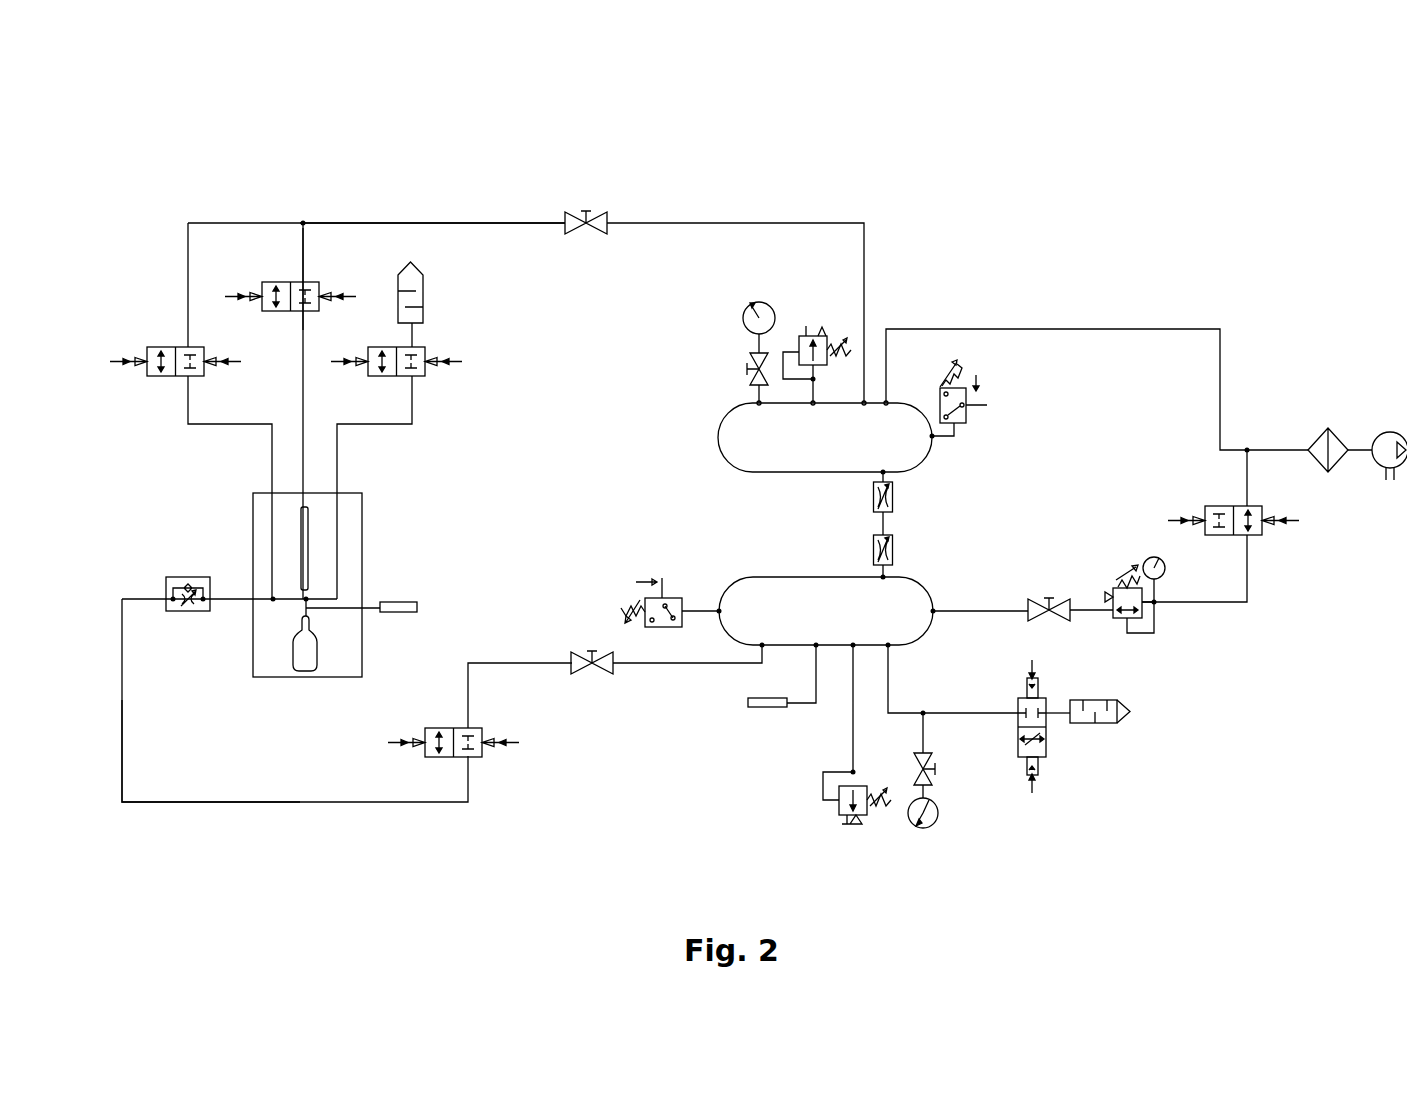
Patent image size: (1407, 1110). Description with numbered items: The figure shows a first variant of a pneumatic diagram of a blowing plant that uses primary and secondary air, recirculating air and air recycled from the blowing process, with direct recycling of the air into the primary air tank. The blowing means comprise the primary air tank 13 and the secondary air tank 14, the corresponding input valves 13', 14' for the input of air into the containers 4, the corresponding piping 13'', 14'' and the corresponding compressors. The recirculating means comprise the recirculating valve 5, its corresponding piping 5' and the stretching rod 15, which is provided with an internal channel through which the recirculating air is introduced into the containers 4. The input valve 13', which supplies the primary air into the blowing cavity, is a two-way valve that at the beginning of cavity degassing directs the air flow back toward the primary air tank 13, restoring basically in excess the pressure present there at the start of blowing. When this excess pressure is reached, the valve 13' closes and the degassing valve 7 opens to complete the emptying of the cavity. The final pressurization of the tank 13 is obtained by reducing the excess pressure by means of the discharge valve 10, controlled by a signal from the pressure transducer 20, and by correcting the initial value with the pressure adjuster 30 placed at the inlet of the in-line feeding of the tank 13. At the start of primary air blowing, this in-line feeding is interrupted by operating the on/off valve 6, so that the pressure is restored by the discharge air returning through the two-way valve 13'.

The container 4 is at (307, 652).
The recirculating valve 5 is at (290, 204).
The recirculating piping 5' is at (342, 209).
The on/off valve 6 is at (1252, 530).
The degassing valve 7 is at (413, 372).
The discharge valve 10 is at (1043, 736).
The primary air tank 13 is at (907, 573).
The primary air input valve 13' is at (484, 796).
The primary air piping 13'' is at (211, 782).
The secondary air tank 14 is at (857, 342).
The secondary air input valve 14' is at (161, 298).
The secondary air piping 14'' is at (443, 167).
The stretching rod 15 is at (302, 545).
The pressure transducer 20 is at (765, 702).
The pressure adjuster 30 is at (1147, 608).